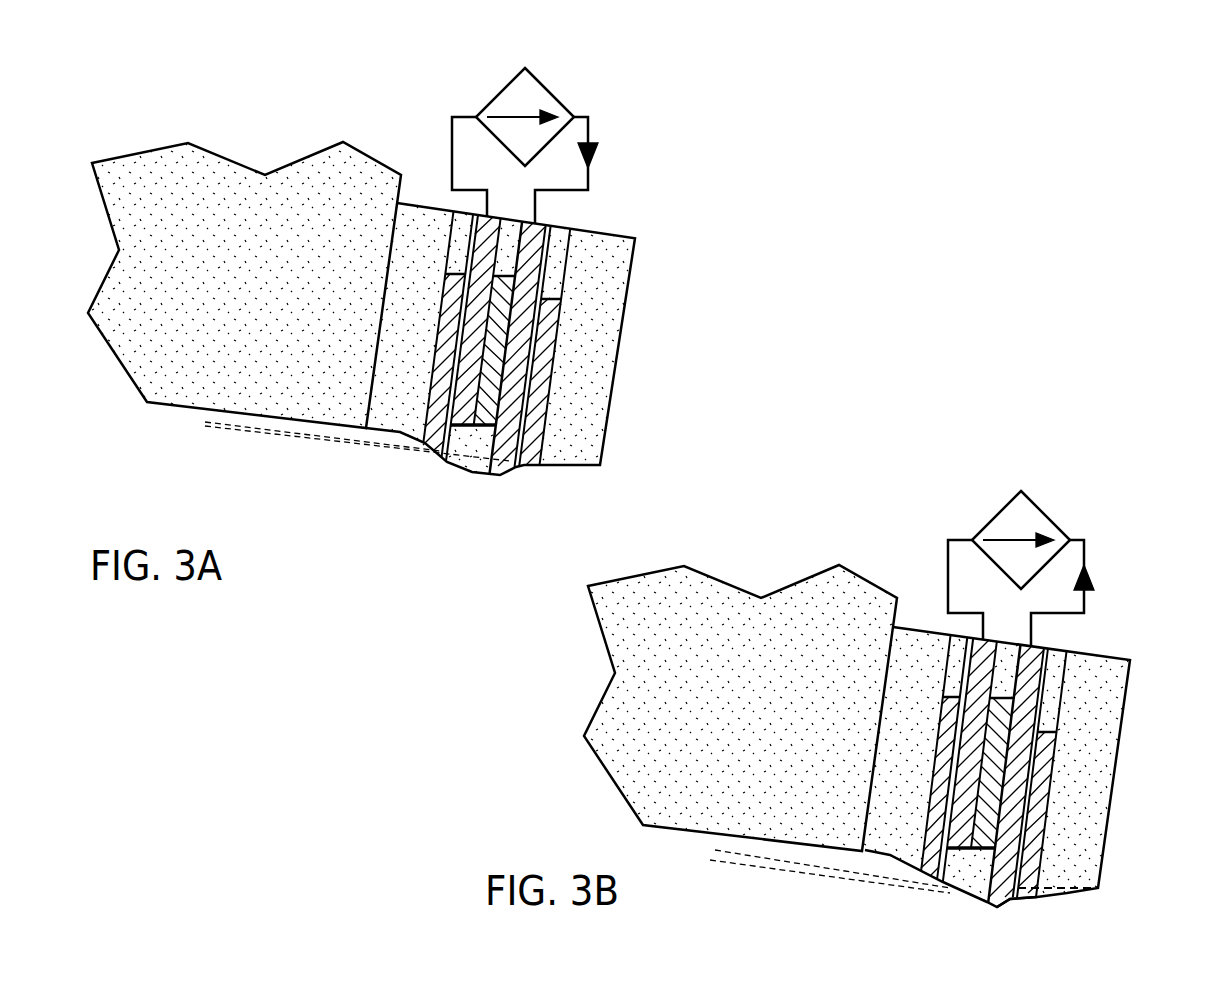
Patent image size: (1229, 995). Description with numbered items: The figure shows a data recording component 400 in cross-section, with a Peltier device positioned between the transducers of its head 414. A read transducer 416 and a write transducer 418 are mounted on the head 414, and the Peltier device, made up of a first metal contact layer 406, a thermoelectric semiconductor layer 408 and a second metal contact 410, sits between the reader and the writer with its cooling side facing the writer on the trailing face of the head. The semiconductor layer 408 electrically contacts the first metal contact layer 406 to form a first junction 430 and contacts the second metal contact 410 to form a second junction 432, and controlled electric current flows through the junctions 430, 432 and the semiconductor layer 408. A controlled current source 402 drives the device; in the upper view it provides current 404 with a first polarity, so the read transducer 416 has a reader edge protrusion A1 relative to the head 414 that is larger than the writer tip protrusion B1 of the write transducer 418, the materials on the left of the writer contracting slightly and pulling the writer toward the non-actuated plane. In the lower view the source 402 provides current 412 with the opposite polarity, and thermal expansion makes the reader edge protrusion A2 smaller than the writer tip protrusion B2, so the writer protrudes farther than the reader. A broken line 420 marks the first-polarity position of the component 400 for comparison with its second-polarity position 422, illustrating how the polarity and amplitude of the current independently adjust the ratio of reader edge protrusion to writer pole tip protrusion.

In FIG. 3A, the data recording component 400 is at (724, 177).
In FIG. 3B, the data recording component 400 is at (850, 511).
In FIG. 3A, the controlled current source 402 is at (560, 95).
In FIG. 3B, the controlled current source 402 is at (1056, 518).
In FIG. 3A, the current 404 is at (596, 152).
In FIG. 3A, the first metal contact layer 406 is at (447, 444).
In FIG. 3B, the first metal contact layer 406 is at (955, 759).
In FIG. 3A, the thermoelectric semiconductor layer 408 is at (472, 437).
In FIG. 3B, the thermoelectric semiconductor layer 408 is at (969, 875).
In FIG. 3A, the second metal contact 410 is at (498, 461).
In FIG. 3B, the second metal contact 410 is at (1018, 774).
In FIG. 3B, the current 412 is at (1096, 576).
In FIG. 3A, the head 414 is at (255, 309).
In FIG. 3B, the head 414 is at (760, 732).
In FIG. 3A, the read transducer 416 is at (437, 452).
In FIG. 3B, the read transducer 416 is at (944, 755).
In FIG. 3A, the write transducer 418 is at (526, 465).
In FIG. 3B, the write transducer 418 is at (1042, 773).
In FIG. 3B, the broken line 420 is at (1074, 887).
In FIG. 3B, the position 422 is at (1076, 898).
In FIG. 3A, the first junction 430 is at (489, 338).
In FIG. 3B, the first junction 430 is at (996, 745).
In FIG. 3A, the second junction 432 is at (507, 372).
In FIG. 3B, the second junction 432 is at (996, 768).
In FIG. 3A, the reader edge protrusion A1 is at (232, 390).
In FIG. 3A, the writer tip protrusion B1 is at (313, 398).
In FIG. 3B, the reader edge protrusion A2 is at (743, 812).
In FIG. 3B, the writer tip protrusion B2 is at (823, 822).